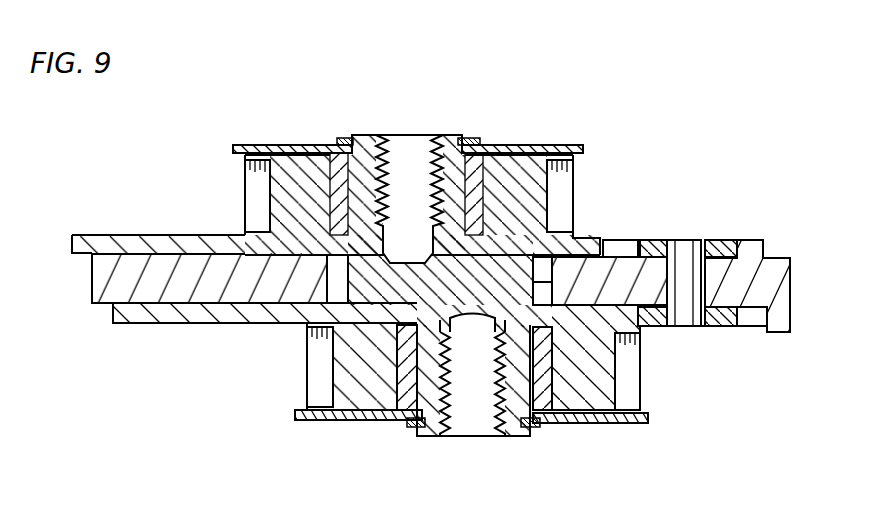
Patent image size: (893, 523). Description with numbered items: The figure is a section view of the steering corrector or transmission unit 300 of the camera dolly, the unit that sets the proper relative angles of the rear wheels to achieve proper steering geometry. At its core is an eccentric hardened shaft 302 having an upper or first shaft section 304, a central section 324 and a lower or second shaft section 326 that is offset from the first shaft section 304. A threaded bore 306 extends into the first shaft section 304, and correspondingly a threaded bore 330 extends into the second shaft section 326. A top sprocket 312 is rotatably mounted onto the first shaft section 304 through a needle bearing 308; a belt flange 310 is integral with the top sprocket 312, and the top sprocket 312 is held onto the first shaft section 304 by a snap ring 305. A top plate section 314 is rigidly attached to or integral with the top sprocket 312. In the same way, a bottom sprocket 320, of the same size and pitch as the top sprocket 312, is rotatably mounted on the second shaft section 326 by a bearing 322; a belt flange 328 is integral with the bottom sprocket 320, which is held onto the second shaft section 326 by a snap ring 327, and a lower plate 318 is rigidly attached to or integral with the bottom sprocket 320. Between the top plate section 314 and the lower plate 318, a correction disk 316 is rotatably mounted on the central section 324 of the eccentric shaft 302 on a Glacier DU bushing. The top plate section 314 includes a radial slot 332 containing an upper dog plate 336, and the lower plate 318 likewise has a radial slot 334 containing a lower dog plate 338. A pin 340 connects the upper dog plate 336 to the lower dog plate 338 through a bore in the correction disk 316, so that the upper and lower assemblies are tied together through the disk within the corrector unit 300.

The steering corrector or transmission unit 300 is at (417, 271).
The eccentric hardened shaft 302 is at (498, 437).
The first shaft section 304 is at (449, 152).
The snap ring 305 is at (473, 140).
The threaded bore 306 is at (404, 174).
The needle bearing 308 is at (345, 138).
The belt flange 310 is at (236, 146).
The top sprocket 312 is at (255, 204).
The top plate section 314 is at (72, 240).
The correction disk 316 is at (92, 266).
The lower plate 318 is at (208, 318).
The bottom sprocket 320 is at (352, 420).
The bearing 322 is at (400, 430).
The central section 324 is at (555, 282).
The second shaft section 326 is at (521, 428).
The snap ring 327 is at (612, 430).
The belt flange 328 is at (652, 419).
The threaded bore 330 is at (465, 422).
The radial slot 332 is at (616, 240).
The radial slot 334 is at (760, 322).
The upper dog plate 336 is at (733, 240).
The lower dog plate 338 is at (716, 330).
The pin 340 is at (687, 242).